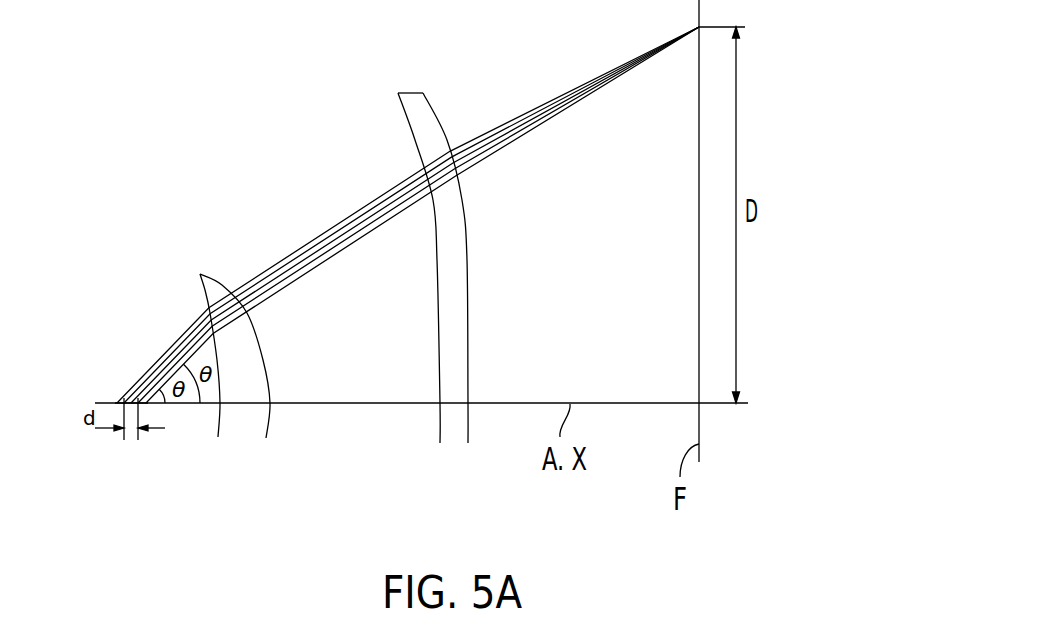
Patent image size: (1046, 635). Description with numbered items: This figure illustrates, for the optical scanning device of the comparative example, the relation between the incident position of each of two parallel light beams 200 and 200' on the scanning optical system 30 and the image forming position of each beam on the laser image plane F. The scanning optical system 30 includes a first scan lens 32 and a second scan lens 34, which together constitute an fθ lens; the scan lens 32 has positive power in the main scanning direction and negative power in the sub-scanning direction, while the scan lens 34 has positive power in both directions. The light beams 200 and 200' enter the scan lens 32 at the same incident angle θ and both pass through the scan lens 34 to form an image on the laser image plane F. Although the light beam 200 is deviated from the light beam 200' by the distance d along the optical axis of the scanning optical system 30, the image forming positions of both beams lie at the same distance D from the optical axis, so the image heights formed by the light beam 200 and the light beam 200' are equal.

The light beam 200 is at (399, 215).
The light beam 200' is at (157, 451).
The scanning optical system 30 is at (334, 329).
The first scan lens 32 is at (260, 417).
The second scan lens 34 is at (425, 302).